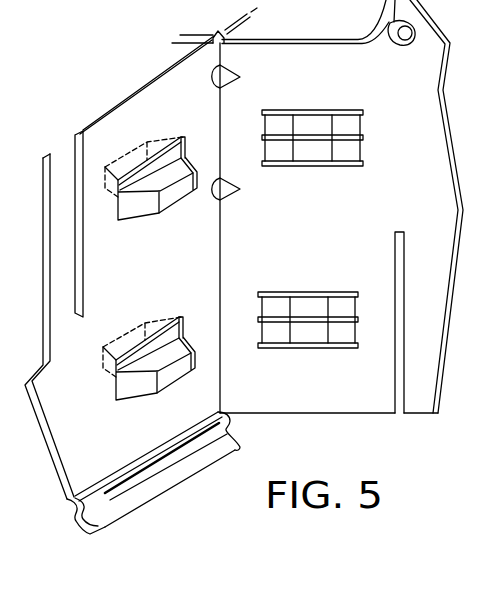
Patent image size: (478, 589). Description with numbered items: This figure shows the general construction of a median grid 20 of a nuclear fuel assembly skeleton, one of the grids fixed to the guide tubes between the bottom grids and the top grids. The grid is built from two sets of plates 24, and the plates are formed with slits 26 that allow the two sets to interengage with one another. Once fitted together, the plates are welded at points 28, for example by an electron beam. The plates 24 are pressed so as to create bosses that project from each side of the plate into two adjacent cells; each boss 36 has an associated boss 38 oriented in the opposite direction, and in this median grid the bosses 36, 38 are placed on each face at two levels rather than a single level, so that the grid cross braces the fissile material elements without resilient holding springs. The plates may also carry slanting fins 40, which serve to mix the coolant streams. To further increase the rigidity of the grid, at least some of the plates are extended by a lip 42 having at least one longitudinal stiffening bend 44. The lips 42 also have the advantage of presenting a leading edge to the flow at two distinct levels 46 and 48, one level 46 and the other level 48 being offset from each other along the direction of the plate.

The median grid 20 is at (46, 139).
The plate 24 is at (158, 88).
The slit 26 is at (78, 175).
The welding point 28 is at (217, 31).
The boss 36 is at (318, 125).
The boss 38 is at (138, 139).
The slanting fin 40 is at (380, 21).
The lip 42 is at (190, 466).
The longitudinal stiffening bend 44 is at (102, 528).
The leading edge level 46 is at (331, 415).
The leading edge level 48 is at (148, 502).